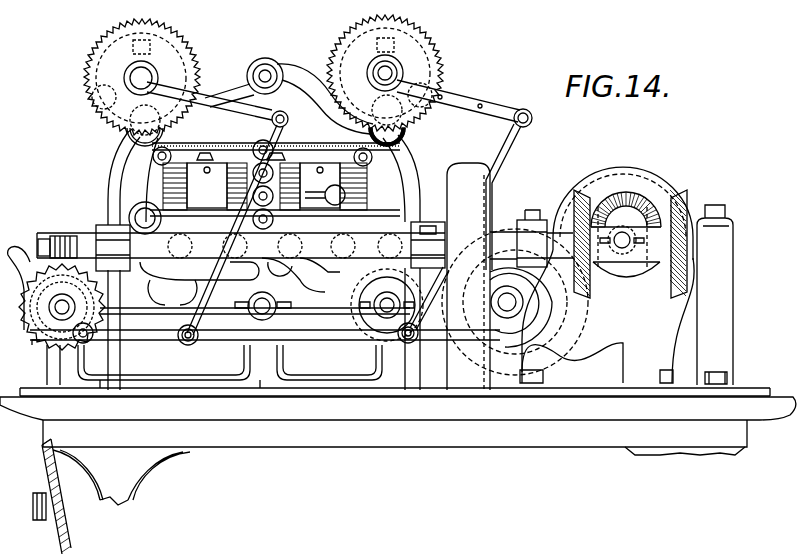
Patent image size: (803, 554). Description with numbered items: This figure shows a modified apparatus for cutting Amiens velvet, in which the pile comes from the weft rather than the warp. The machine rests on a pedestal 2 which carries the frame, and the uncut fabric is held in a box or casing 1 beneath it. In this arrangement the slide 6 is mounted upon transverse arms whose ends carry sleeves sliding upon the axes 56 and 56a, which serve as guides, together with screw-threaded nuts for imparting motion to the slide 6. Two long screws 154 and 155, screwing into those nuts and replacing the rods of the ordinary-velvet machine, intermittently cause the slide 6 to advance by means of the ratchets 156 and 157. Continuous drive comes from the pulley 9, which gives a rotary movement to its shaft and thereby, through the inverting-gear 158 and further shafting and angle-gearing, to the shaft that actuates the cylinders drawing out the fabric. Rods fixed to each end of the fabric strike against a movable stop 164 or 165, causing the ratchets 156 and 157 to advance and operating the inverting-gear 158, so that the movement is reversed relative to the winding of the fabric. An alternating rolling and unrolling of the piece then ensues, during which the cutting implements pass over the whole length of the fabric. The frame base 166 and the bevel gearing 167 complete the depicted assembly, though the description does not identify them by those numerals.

The box or casing 1 is at (111, 496).
The pedestal 2 is at (398, 421).
The slide 6 is at (330, 116).
The pulley 9 is at (468, 276).
The rod or axis 56 is at (125, 135).
The axis 56a is at (410, 128).
The long screw 154 is at (138, 79).
The long screw 155 is at (388, 73).
The ratchet 156 is at (193, 62).
The ratchet 157 is at (340, 58).
The inverting-gear 158 is at (608, 282).
The movable stop 164 is at (18, 262).
The movable stop 165 is at (320, 270).
The frame base 166 is at (324, 333).
The bevel gears 167 is at (640, 232).